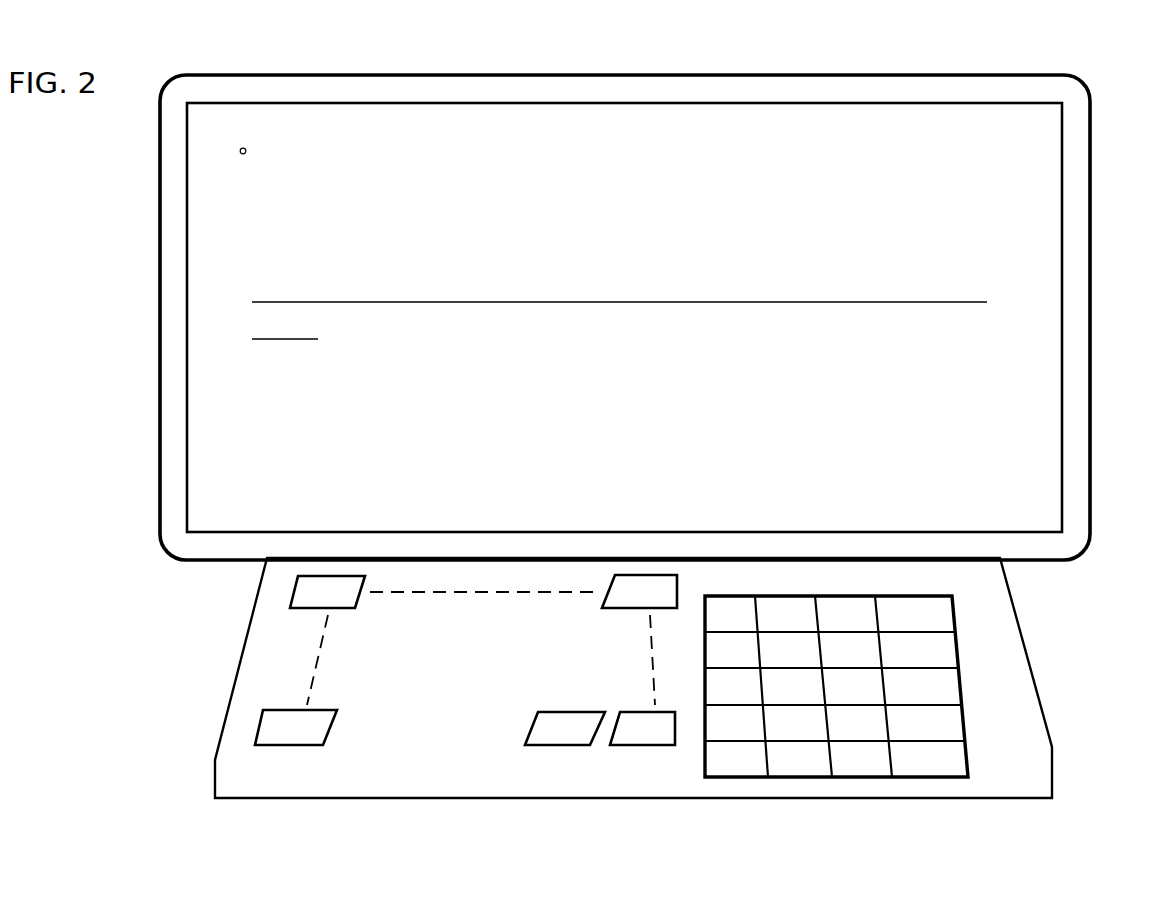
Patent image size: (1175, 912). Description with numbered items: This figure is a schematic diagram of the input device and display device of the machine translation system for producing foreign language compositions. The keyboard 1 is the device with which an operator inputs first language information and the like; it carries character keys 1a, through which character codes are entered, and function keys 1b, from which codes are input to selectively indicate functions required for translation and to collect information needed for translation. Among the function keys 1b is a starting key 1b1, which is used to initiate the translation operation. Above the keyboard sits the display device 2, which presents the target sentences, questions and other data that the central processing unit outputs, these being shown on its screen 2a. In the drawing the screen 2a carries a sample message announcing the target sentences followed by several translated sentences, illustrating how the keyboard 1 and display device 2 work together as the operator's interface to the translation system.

The keyboard 1 is at (1008, 583).
The character keys 1a is at (657, 763).
The function keys 1b is at (892, 717).
The starting key 1b1 is at (955, 617).
The display device 2 is at (1092, 129).
The screen 2a is at (1078, 107).